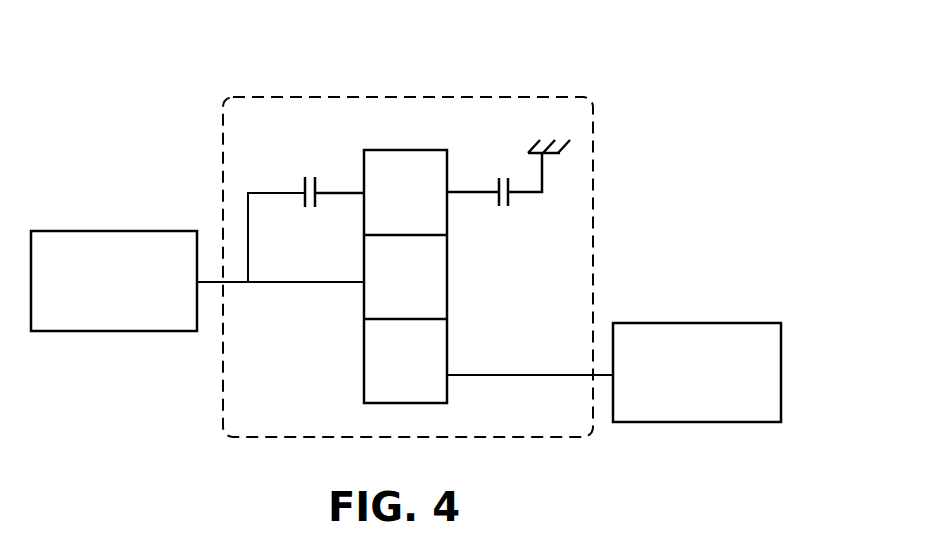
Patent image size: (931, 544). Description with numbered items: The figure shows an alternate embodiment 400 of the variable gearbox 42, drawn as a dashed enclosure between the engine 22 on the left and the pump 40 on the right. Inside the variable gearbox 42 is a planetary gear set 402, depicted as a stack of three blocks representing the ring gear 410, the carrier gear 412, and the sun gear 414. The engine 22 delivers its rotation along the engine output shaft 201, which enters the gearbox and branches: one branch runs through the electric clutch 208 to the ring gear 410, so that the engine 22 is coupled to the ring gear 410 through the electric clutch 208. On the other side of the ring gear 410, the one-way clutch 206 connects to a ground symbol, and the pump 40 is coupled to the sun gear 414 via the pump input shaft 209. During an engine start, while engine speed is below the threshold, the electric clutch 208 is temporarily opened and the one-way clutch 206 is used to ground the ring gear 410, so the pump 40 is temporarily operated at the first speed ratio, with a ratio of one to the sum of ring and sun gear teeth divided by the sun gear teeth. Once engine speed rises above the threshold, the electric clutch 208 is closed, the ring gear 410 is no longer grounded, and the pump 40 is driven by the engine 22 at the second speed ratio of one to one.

The alternate embodiment 400 is at (722, 72).
The variable gearbox 42 is at (430, 97).
The engine 22 is at (114, 281).
The pump 40 is at (697, 372).
The planetary gear set 402 is at (405, 150).
The ring gear 410 is at (405, 192).
The carrier gear 412 is at (405, 277).
The sun gear 414 is at (405, 361).
The engine output shaft 201 is at (233, 282).
The electric clutch 208 is at (310, 175).
The one-way clutch 206 is at (502, 207).
The pump input shaft 209 is at (525, 375).